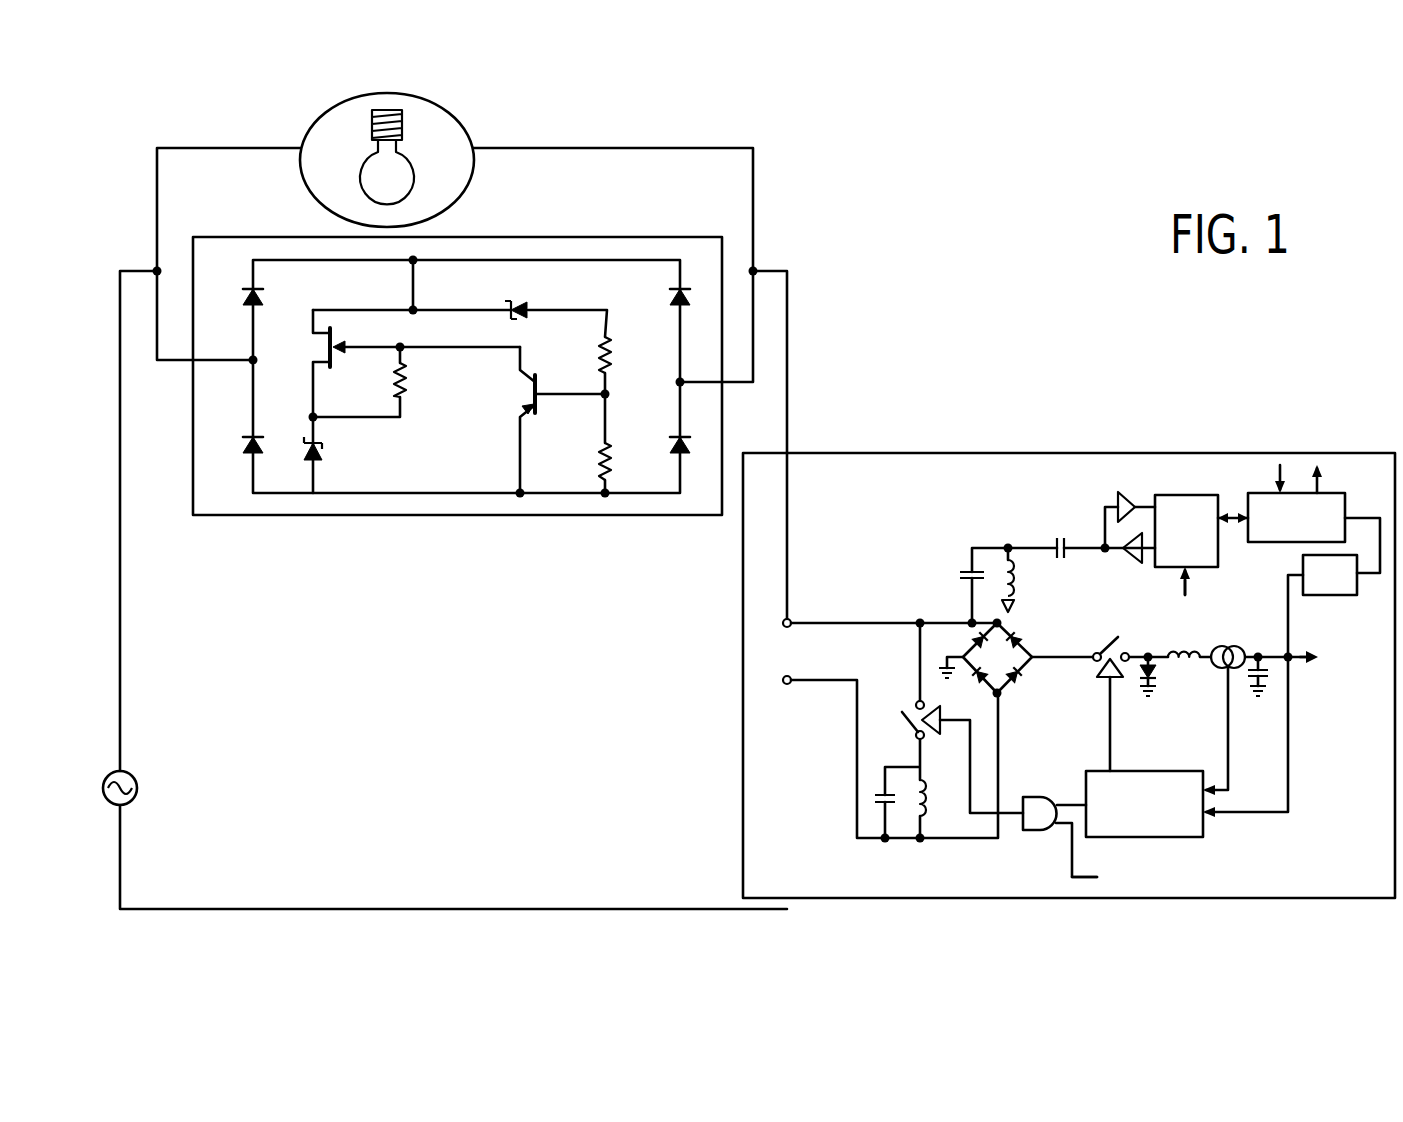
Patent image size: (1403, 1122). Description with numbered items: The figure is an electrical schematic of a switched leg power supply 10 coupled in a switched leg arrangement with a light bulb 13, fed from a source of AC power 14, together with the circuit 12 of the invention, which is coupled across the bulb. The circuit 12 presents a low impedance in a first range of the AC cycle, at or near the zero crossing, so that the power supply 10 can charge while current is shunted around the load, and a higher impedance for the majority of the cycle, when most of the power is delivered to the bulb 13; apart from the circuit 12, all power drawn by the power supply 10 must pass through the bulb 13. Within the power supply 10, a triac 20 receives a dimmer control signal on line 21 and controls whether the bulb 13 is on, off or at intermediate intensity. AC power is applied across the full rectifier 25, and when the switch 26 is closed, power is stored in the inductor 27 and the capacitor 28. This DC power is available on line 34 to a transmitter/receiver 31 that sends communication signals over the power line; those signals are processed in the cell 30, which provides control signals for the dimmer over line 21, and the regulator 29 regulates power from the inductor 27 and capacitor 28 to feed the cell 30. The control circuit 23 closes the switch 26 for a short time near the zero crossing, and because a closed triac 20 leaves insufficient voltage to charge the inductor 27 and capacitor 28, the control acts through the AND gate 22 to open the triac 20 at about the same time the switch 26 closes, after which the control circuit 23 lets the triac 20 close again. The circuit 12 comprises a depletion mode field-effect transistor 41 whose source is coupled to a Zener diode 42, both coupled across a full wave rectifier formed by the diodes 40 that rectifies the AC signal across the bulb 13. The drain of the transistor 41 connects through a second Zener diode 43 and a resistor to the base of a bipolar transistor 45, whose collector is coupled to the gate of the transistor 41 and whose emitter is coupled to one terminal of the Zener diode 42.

The switched leg power supply 10 is at (1020, 437).
The circuit 12 is at (423, 615).
The light bulb 13 is at (453, 115).
The source of AC power 14 is at (137, 781).
The triac 20 is at (898, 704).
The line 21 is at (1085, 877).
The AND gate 22 is at (1037, 797).
The control circuit 23 is at (1160, 770).
The full rectifier 25 is at (1000, 647).
The switch 26 is at (1101, 630).
The inductor 27 is at (1185, 650).
The capacitor 28 is at (1270, 670).
The regulator 29 is at (1330, 595).
The cell 30 is at (1330, 493).
The transmitter/receiver 31 is at (1178, 495).
The line 34 is at (1185, 585).
The diodes 40 is at (263, 292).
The depletion mode field-effect transistor 41 is at (318, 345).
The Zener diode 42 is at (322, 452).
The second Zener diode 43 is at (525, 305).
The bipolar transistor 45 is at (523, 403).